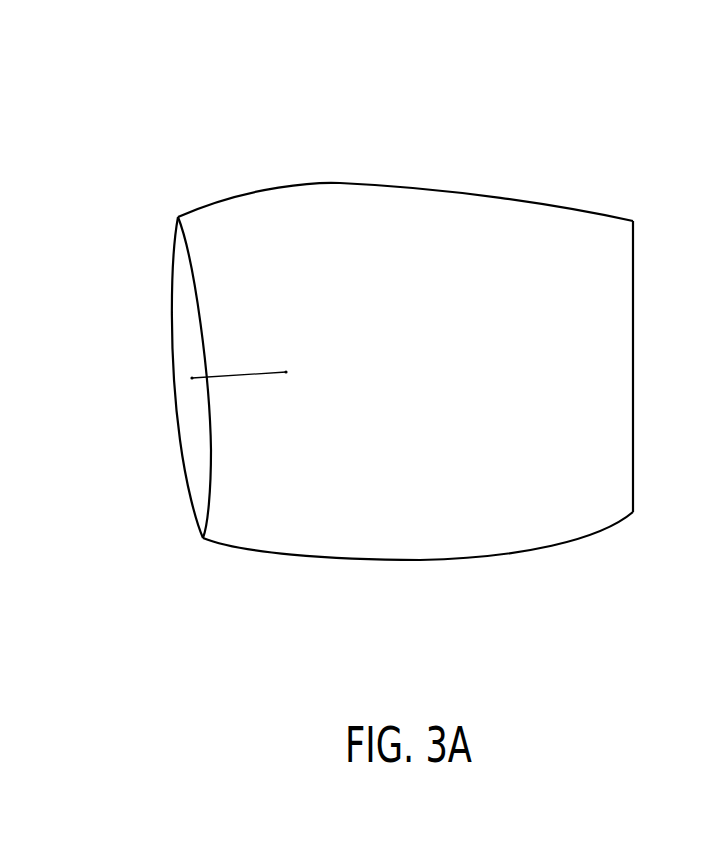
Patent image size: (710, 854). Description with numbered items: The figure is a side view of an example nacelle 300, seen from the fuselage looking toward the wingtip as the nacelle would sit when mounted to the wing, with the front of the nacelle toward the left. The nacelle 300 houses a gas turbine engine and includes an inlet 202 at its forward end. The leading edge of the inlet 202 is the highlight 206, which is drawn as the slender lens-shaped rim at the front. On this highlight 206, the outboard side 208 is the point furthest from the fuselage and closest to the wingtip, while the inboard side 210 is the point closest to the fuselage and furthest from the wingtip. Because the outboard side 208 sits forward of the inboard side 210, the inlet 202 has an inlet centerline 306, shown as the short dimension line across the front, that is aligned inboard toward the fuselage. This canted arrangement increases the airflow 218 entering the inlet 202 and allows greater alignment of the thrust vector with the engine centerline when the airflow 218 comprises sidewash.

The nacelle 300 is at (349, 333).
The inlet 202 is at (138, 363).
The outboard side 208 is at (178, 215).
The airflow 218 is at (150, 297).
The highlight 206 is at (182, 453).
The inboard side 210 is at (202, 542).
The inlet centerline 306 is at (238, 372).